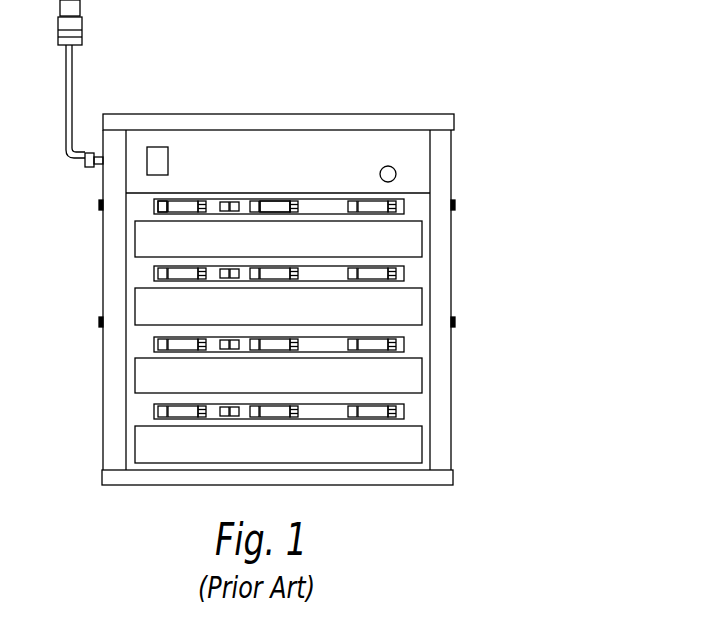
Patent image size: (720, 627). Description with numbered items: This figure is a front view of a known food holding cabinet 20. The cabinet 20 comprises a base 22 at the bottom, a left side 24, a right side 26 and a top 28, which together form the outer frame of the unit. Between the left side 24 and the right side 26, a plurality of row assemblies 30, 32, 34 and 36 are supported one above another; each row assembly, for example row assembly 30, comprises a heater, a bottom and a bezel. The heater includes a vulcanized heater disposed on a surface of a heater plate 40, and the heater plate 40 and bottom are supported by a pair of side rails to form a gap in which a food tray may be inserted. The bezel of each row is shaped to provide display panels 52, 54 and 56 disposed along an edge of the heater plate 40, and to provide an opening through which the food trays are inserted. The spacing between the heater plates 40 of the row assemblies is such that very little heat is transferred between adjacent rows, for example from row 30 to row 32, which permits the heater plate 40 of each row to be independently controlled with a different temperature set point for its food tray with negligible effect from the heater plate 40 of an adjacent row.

The food holding cabinet 20 is at (294, 247).
The base 22 is at (101, 481).
The left side 24 is at (103, 364).
The right side 26 is at (452, 371).
The top 28 is at (225, 114).
The row assembly 30 is at (345, 198).
The row assembly 32 is at (457, 298).
The row assembly 34 is at (457, 355).
The row assembly 36 is at (453, 453).
The heater plate 40 is at (126, 220).
The display panel 52 is at (366, 193).
The display panel 54 is at (270, 203).
The display panel 56 is at (176, 200).